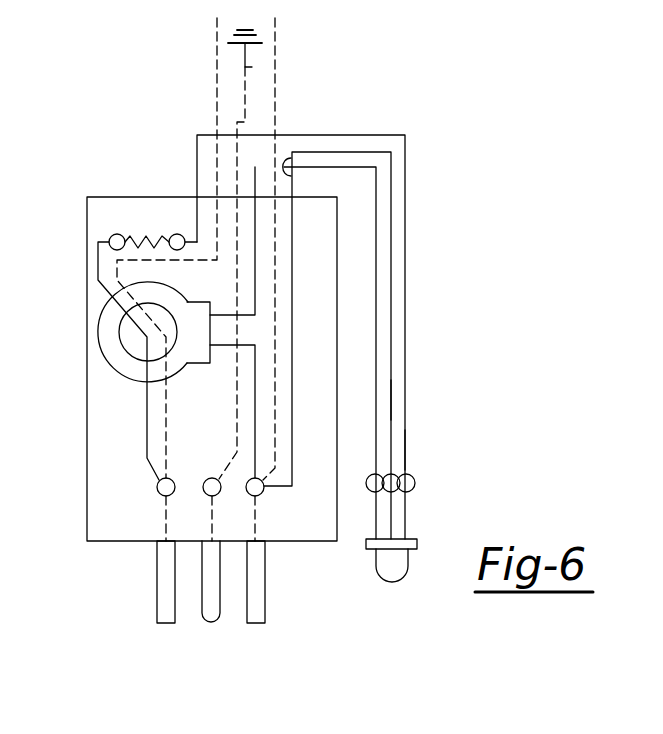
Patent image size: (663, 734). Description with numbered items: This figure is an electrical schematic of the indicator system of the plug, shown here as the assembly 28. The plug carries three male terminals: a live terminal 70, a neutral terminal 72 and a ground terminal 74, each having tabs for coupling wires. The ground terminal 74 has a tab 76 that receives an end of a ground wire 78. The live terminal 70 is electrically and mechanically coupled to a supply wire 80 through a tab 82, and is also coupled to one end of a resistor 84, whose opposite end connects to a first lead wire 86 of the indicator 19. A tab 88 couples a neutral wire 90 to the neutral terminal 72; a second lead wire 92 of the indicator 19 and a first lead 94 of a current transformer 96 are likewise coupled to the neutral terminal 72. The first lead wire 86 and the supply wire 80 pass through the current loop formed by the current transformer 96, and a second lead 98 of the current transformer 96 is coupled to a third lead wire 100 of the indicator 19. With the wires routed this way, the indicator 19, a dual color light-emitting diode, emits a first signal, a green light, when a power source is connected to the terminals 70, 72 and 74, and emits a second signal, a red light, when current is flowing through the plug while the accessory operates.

The indicator 19 is at (408, 596).
The switch assembly 28 is at (392, 66).
The male live terminal 70 is at (164, 623).
The male neutral terminal 72 is at (256, 623).
The male ground terminal 74 is at (211, 623).
The tab 76 is at (205, 480).
The ground wire 78 is at (255, 66).
The supply wire 80 is at (217, 85).
The tab 82 is at (157, 485).
The resistor 84 is at (143, 236).
The first lead wire 86 is at (407, 457).
The tab 88 is at (265, 494).
The neutral wire 90 is at (277, 262).
The second lead wire 92 is at (393, 410).
The first lead 94 is at (253, 458).
The current transformer 96 is at (100, 325).
The second lead 98 is at (223, 313).
The third lead wire 100 is at (377, 378).